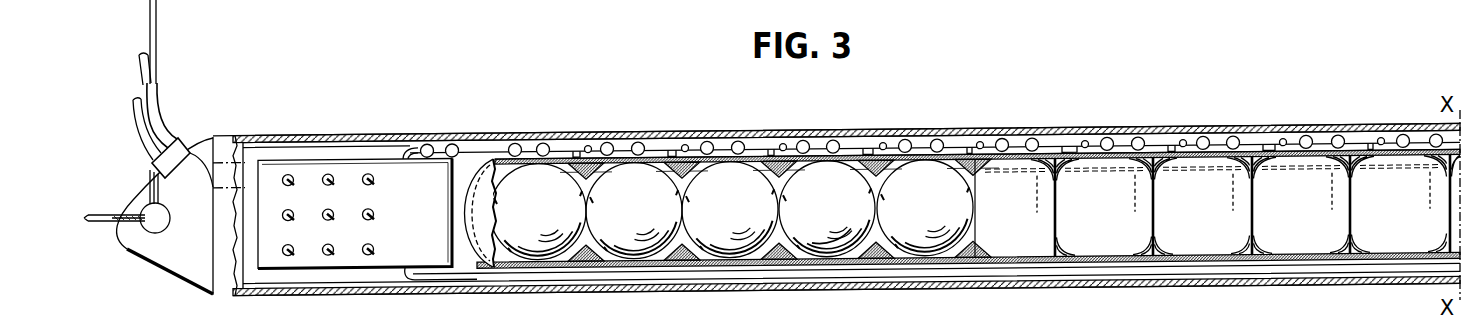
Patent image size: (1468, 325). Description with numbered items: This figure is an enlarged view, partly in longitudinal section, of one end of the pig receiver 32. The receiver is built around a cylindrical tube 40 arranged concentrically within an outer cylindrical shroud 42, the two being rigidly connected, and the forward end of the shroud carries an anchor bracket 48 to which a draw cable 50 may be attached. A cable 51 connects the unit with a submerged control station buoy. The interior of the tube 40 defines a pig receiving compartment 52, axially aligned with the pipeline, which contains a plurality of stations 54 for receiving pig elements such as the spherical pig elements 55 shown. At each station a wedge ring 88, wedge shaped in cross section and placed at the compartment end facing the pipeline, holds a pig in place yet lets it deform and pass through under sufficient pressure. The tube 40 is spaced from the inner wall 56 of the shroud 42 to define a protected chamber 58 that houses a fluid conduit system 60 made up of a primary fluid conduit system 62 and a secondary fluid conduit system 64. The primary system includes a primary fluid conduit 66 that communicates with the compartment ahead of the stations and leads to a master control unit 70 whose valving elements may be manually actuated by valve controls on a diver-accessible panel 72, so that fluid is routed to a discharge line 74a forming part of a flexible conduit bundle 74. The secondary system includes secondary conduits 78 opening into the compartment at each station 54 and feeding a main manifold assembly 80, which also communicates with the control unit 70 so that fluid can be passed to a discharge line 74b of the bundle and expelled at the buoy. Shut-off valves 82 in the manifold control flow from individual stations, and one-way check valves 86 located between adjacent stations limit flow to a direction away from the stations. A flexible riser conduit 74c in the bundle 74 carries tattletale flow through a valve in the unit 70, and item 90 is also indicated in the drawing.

The pig receiver 32 is at (1083, 97).
The cylindrical tube 40 is at (570, 159).
The outer cylindrical shroud 42 is at (759, 290).
The anchor bracket 48 is at (131, 182).
The draw cable 50 is at (100, 226).
The cable 51 is at (158, 14).
The pig receiving compartment 52 is at (870, 178).
The pig receiving station 54 is at (504, 176).
The spherical pig element 55 is at (834, 232).
The inner wall 56 is at (352, 142).
The protected chamber 58 is at (390, 155).
The fluid conduit system 60 is at (298, 159).
The primary fluid conduit system 62 is at (475, 289).
The secondary fluid conduit system 64 is at (475, 142).
The primary fluid conduit 66 is at (625, 278).
The master control unit 70 is at (385, 257).
The panel 72 is at (348, 251).
The flexible conduit bundle 74 is at (156, 107).
The discharge line 74a is at (161, 102).
The discharge line 74b is at (137, 62).
The flexible riser conduit 74c is at (134, 113).
The secondary conduit 78 is at (770, 155).
The main manifold assembly 80 is at (1013, 140).
The shut-off valve 82 is at (452, 141).
The one-way check valve 86 is at (426, 158).
The wedge ring 88 is at (670, 265).
The cap insert 90 is at (470, 178).